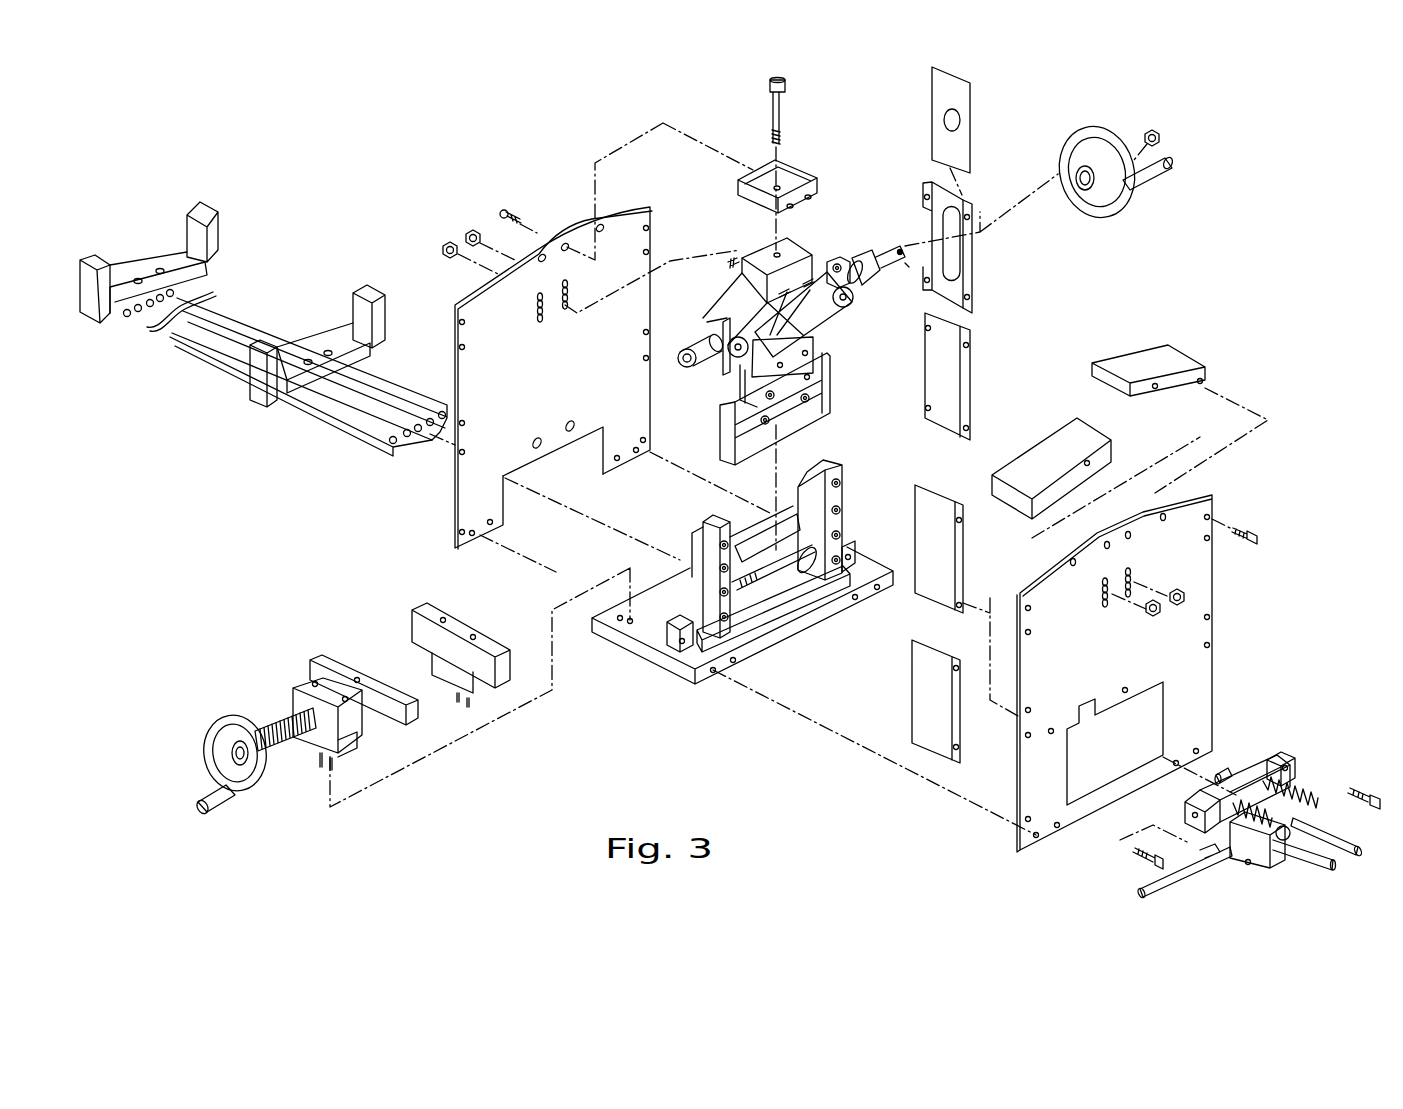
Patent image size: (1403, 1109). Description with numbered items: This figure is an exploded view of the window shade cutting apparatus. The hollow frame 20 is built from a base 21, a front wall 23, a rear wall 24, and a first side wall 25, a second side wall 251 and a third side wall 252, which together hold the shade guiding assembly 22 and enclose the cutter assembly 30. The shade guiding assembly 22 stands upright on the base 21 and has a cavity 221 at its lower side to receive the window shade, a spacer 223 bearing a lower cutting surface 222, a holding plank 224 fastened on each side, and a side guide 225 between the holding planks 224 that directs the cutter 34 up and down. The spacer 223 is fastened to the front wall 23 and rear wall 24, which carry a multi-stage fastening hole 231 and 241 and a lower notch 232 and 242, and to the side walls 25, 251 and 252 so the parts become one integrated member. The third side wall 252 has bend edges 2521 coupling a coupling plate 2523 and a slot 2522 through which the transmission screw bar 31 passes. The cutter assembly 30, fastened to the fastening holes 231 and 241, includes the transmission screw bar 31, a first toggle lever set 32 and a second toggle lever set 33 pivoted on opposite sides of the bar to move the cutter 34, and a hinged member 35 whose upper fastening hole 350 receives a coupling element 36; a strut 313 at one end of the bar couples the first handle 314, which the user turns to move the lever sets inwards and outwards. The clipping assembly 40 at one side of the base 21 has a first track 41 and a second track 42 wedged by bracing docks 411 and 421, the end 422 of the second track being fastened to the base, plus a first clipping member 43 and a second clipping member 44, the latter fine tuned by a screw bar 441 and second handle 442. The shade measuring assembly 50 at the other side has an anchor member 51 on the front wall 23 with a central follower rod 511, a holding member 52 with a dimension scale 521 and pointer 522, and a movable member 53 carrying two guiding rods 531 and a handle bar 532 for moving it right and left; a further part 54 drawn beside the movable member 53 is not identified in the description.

The hollow frame 20 is at (578, 200).
The base 21 is at (785, 635).
The shade guiding assembly 22 is at (852, 466).
The cavity 221 is at (803, 563).
The lower cutting surface 222 is at (783, 587).
The spacer 223 is at (753, 607).
The holding plank 224 is at (840, 533).
The side guide 225 is at (840, 508).
The front wall 23 is at (1198, 602).
The multi-stage fastening hole 231 is at (1130, 570).
The notch 232 is at (1068, 775).
The rear wall 24 is at (470, 485).
The multi-stage fastening hole 241 is at (568, 280).
The notch 242 is at (560, 480).
The first side wall 25 is at (1088, 460).
The second side wall 251 is at (950, 400).
The third side wall 252 is at (955, 195).
The bend edges 2521 is at (973, 274).
The slot 2522 is at (960, 248).
The coupling plate 2523 is at (985, 98).
The cutter assembly 30 is at (833, 242).
The transmission screw bar 31 is at (827, 325).
The first toggle lever set 32 is at (699, 333).
The strut 313 is at (900, 252).
The first handle 314 is at (1135, 208).
The second toggle lever set 33 is at (862, 307).
The cutter 34 is at (843, 365).
The hinged member 35 is at (758, 258).
The fastening hole 350 is at (775, 251).
The coupling element 36 is at (793, 178).
The clipping assembly 40 is at (275, 233).
The first track 41 is at (130, 323).
The bracing dock 411 is at (192, 227).
The second track 42 is at (317, 395).
The bracing dock 421 is at (360, 313).
The end 422 is at (375, 417).
The first clipping member 43 is at (412, 613).
The second clipping member 44 is at (322, 660).
The screw bar 441 is at (270, 735).
The second handle 442 is at (230, 808).
The shade measuring assembly 50 is at (1283, 734).
The anchor member 51 is at (1187, 812).
The follower rod 511 is at (1218, 770).
The holding member 52 is at (1335, 824).
The dimension scale 521 is at (1318, 803).
The pointer 522 is at (1290, 758).
The movable member 53 is at (1248, 848).
The guiding rods 531 is at (1318, 858).
The handle bar 532 is at (1148, 876).
The shaft 54 is at (1212, 854).